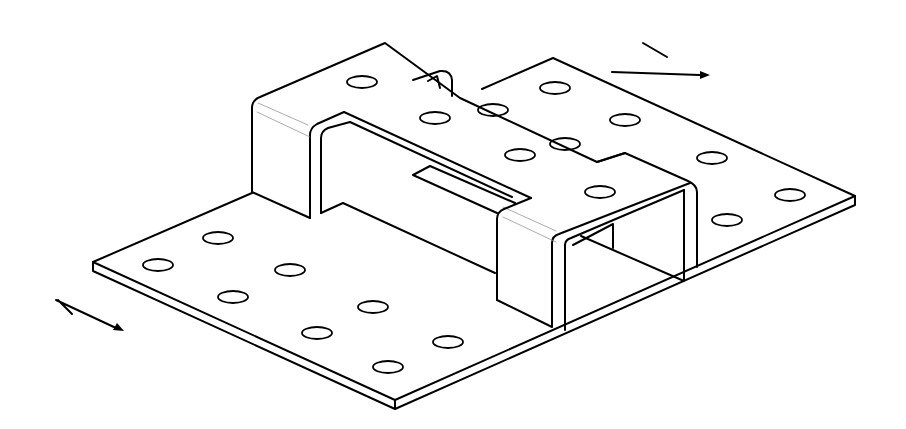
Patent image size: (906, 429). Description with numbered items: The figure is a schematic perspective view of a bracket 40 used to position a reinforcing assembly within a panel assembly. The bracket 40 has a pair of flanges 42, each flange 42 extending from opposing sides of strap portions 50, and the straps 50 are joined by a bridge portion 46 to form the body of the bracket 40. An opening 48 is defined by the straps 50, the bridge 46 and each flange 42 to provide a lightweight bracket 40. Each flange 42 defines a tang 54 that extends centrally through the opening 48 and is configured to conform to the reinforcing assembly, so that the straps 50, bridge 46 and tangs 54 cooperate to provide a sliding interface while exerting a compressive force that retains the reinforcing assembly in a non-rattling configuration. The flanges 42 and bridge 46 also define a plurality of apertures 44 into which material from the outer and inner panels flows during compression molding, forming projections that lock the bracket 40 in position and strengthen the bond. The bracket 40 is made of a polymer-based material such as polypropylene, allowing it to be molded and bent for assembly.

The bracket 40 is at (150, 159).
The flange 42 is at (160, 230).
The aperture 44 is at (362, 82).
The bridge portion 46 is at (517, 118).
The opening 48 is at (340, 165).
The strap portion 50 is at (252, 145).
The tang 54 is at (390, 223).